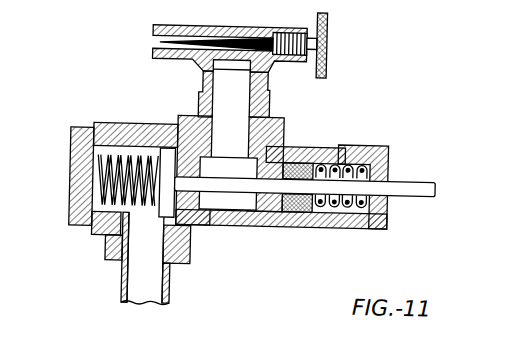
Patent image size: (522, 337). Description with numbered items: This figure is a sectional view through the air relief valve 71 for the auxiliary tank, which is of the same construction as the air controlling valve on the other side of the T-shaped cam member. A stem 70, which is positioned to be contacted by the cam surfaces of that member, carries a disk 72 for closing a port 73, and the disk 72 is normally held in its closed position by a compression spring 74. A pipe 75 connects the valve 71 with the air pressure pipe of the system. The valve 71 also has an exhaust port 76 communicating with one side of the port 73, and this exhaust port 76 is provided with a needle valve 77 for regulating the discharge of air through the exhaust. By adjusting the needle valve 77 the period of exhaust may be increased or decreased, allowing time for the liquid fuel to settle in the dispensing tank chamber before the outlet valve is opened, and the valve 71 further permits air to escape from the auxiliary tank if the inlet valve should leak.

The stem 70 is at (413, 179).
The valve 71 is at (327, 143).
The disk 72 is at (173, 210).
The port 73 is at (181, 132).
The compression spring 74 is at (110, 195).
The pipe 75 is at (123, 286).
The exhaust port 76 is at (154, 44).
The needle valve 77 is at (229, 42).